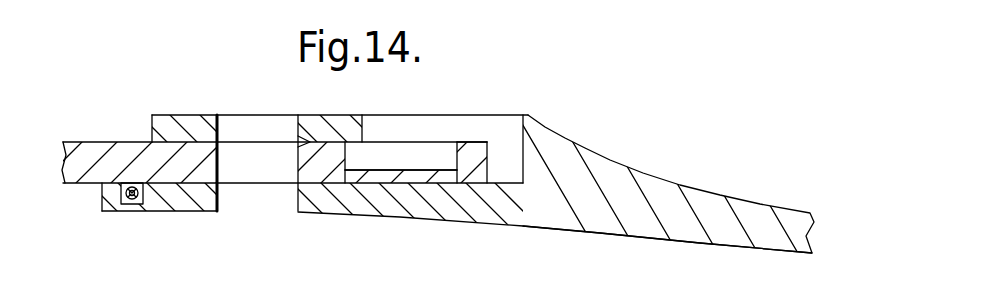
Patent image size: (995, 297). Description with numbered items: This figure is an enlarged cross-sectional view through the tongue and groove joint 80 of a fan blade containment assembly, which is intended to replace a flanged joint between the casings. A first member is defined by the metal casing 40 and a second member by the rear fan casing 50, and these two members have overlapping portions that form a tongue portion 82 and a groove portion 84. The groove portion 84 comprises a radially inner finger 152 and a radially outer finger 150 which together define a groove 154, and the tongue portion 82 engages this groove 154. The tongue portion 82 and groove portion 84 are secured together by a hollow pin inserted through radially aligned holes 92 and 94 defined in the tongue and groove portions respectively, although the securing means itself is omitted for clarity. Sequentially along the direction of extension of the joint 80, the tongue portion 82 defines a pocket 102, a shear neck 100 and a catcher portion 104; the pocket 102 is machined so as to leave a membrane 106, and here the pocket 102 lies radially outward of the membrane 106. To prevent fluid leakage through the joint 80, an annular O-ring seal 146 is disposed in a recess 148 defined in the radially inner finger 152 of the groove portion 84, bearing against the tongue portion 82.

The tongue and groove joint 80 is at (530, 76).
The rear fan casing 50 is at (733, 197).
The tongue portion 82 is at (112, 142).
The hole 94 is at (218, 130).
The radially outer finger 150 is at (317, 121).
The shear neck 100 is at (355, 158).
The pocket 102 is at (437, 152).
The catcher portion 104 is at (478, 162).
The hole 92 is at (219, 160).
The metal casing 40 is at (84, 184).
The annular O-ring seal 146 is at (130, 205).
The recess 148 is at (140, 205).
The radially inner finger 152 is at (330, 212).
The groove portion 84 is at (500, 223).
The membrane 106 is at (378, 172).
The groove 154 is at (358, 163).